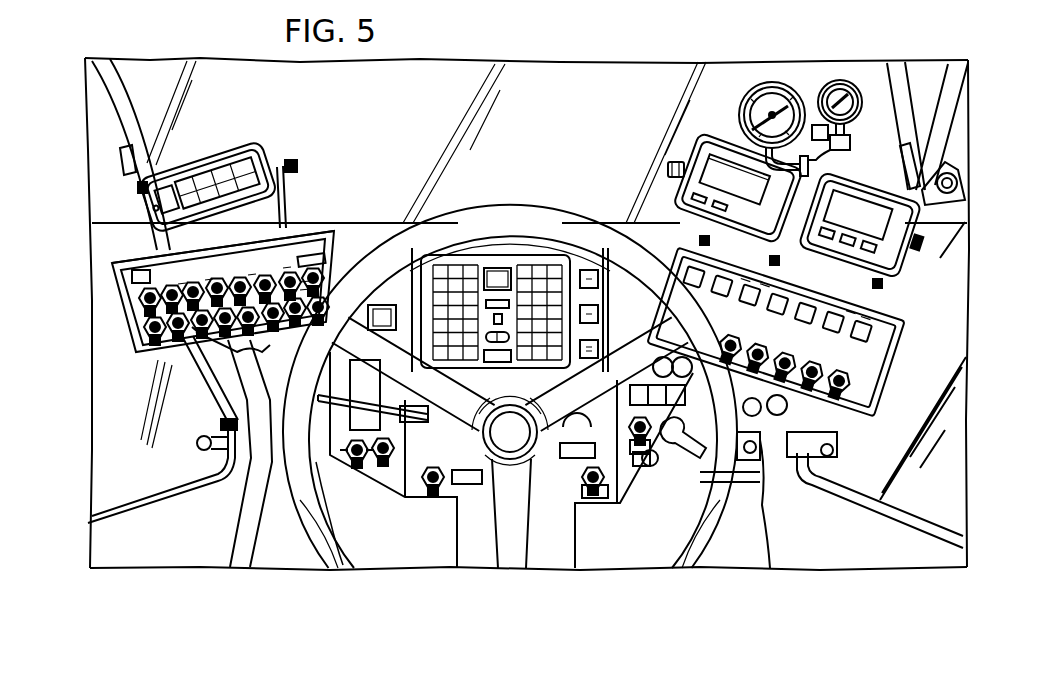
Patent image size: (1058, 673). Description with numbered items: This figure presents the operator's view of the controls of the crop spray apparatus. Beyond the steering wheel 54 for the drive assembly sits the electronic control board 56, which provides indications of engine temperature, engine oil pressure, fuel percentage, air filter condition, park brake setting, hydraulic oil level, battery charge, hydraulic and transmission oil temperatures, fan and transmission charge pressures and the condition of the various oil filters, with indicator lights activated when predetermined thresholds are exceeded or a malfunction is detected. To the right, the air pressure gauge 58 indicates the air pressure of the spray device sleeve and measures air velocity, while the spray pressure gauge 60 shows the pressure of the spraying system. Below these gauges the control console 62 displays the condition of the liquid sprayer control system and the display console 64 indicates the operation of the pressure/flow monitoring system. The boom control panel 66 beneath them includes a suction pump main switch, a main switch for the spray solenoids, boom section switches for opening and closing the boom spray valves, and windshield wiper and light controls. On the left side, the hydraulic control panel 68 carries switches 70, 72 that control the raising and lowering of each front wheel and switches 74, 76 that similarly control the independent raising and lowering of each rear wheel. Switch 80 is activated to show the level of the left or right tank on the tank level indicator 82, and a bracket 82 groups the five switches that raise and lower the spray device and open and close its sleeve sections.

The steering wheel 54 is at (500, 221).
The electronic control board 56 is at (505, 265).
The air pressure gauge 58 is at (778, 92).
The spray pressure gauge 60 is at (846, 88).
The control console 62 is at (705, 168).
The display console 64 is at (907, 243).
The boom control panel 66 is at (863, 368).
The hydraulic control panel 68 is at (245, 285).
The switch 70 is at (137, 292).
The switch 72 is at (143, 252).
The switch 74 is at (223, 278).
The switch 76 is at (252, 278).
The switch 80 is at (305, 268).
The tank level indicator 82 is at (227, 183).